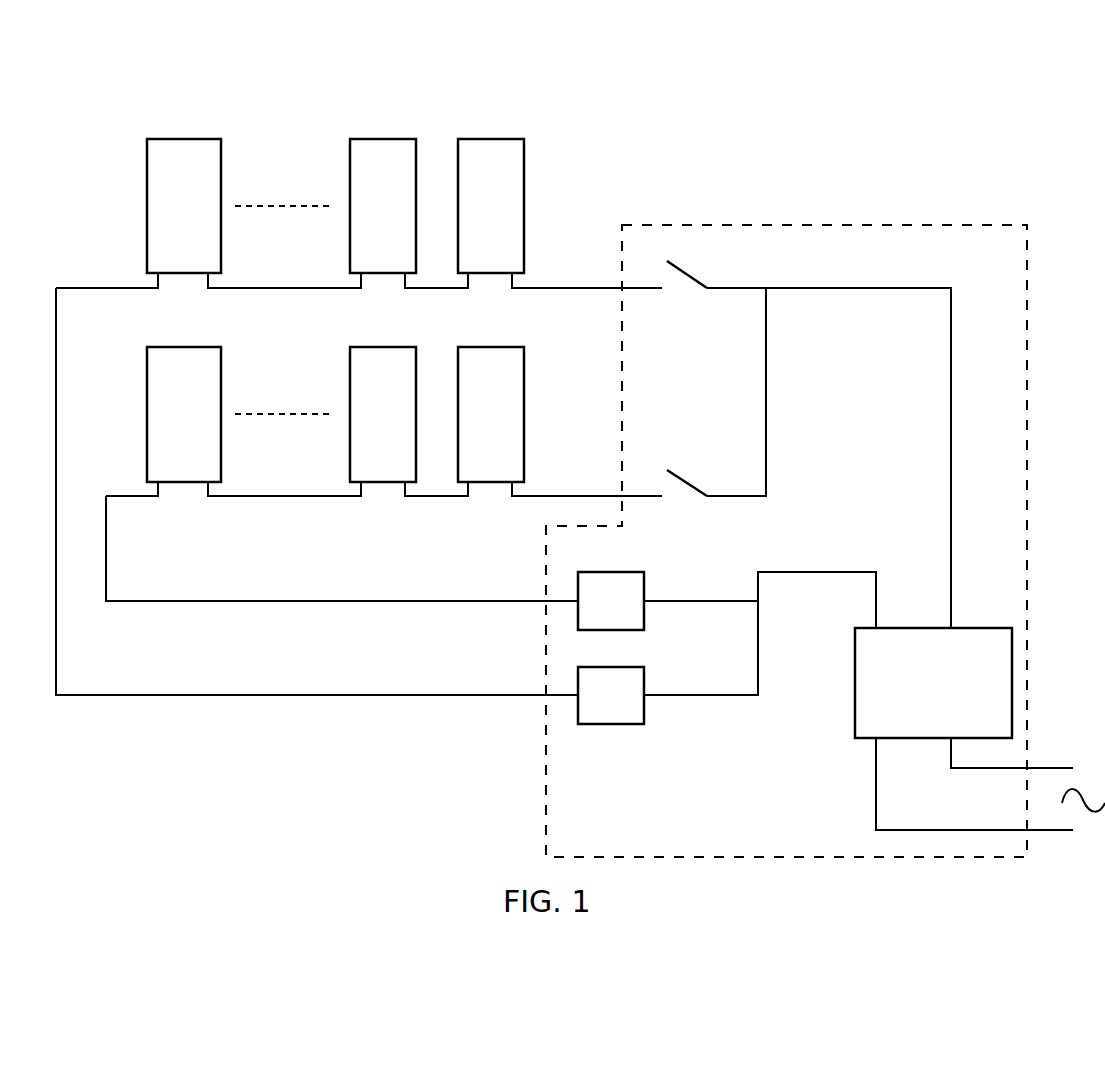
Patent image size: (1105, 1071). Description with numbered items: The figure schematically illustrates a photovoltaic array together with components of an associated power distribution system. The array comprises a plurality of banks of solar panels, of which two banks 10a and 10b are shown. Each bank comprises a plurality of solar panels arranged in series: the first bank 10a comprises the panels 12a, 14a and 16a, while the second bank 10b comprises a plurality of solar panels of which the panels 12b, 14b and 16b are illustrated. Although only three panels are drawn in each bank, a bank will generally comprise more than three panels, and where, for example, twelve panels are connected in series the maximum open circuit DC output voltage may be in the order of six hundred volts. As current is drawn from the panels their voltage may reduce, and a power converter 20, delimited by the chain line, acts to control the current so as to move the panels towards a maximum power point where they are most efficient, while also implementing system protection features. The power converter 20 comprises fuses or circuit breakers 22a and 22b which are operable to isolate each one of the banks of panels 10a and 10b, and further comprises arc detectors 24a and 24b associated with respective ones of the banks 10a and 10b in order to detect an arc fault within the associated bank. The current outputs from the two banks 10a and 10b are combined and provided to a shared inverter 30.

The first bank of solar panels 10a is at (562, 171).
The second bank of solar panels 10b is at (535, 369).
The solar panel 12a is at (187, 137).
The solar panel 14a is at (383, 137).
The solar panel 16a is at (497, 137).
The solar panel 12b is at (187, 345).
The solar panel 14b is at (383, 345).
The solar panel 16b is at (497, 345).
The power converter 20 is at (821, 225).
The fuse or circuit breaker 22a is at (690, 271).
The fuse or circuit breaker 22b is at (690, 478).
The arc detector 24a is at (646, 586).
The arc detector 24b is at (646, 682).
The shared inverter 30 is at (947, 693).